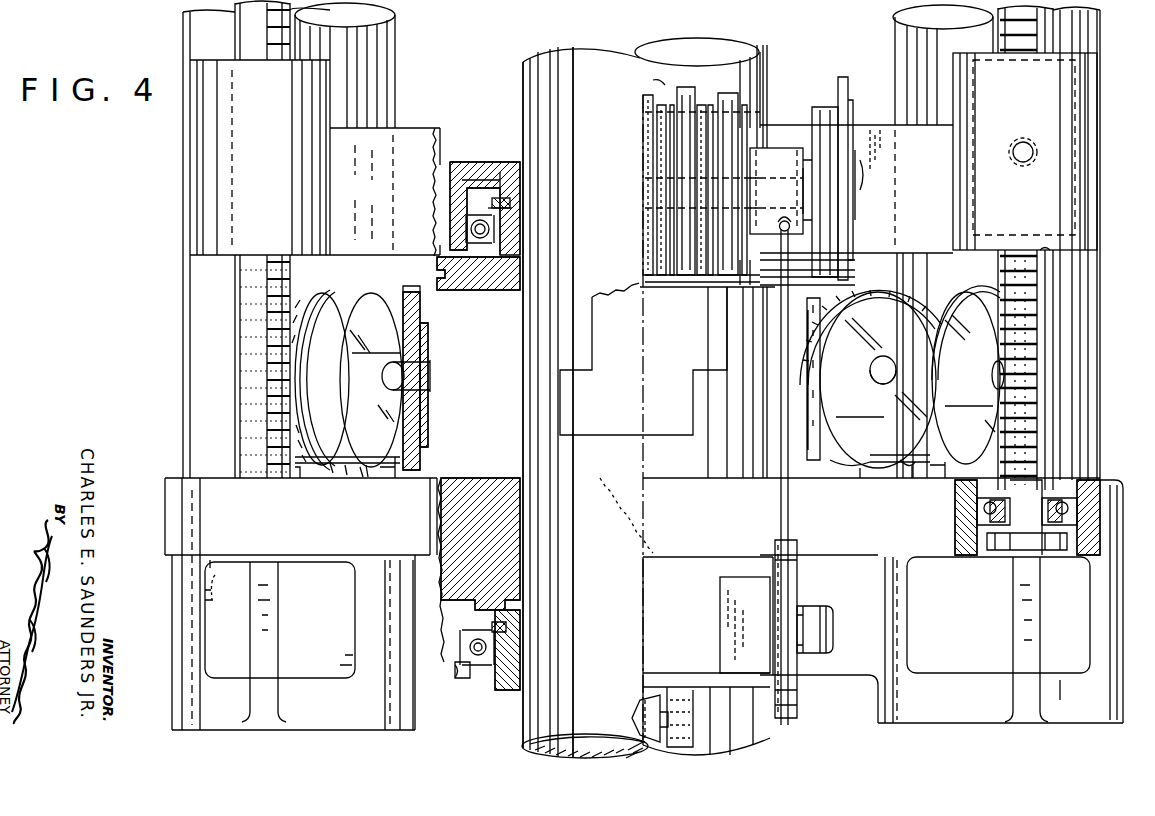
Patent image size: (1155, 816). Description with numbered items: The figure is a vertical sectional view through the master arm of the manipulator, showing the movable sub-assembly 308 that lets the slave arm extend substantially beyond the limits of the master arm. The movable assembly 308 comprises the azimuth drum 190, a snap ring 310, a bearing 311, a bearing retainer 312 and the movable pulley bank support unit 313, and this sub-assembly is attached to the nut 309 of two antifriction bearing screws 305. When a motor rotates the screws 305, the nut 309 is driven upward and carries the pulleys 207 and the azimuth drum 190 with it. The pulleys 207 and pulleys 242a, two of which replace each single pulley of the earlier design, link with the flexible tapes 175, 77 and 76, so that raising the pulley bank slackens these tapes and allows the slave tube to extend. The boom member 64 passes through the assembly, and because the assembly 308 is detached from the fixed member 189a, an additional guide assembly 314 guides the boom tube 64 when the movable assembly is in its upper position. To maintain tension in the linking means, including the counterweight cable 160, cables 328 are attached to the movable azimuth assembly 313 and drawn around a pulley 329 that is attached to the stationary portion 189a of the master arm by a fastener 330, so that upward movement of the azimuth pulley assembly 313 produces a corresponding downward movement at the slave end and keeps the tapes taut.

The movable assembly 308 is at (172, 136).
The antifriction bearing screw 305 is at (245, 395).
The movable pulley bank support unit 313 is at (418, 130).
The bearing retainer 312 is at (492, 162).
The snap ring 310 is at (510, 204).
The bearing 311 is at (500, 231).
The azimuth drum 190 is at (484, 282).
The boom member 64 is at (535, 733).
The linking tape 175 is at (645, 88).
The linking tape 77 is at (688, 95).
The linking tape 76 is at (728, 95).
The pulley 207 is at (753, 102).
The nut 309 is at (1076, 131).
The pulley 242a is at (318, 296).
The counterweight cable 160 is at (918, 455).
The guide assembly 314 is at (483, 684).
The cable 328 is at (790, 518).
The pulley 329 is at (797, 702).
The fastener 330 is at (815, 610).
The fixed member 189a is at (1103, 485).